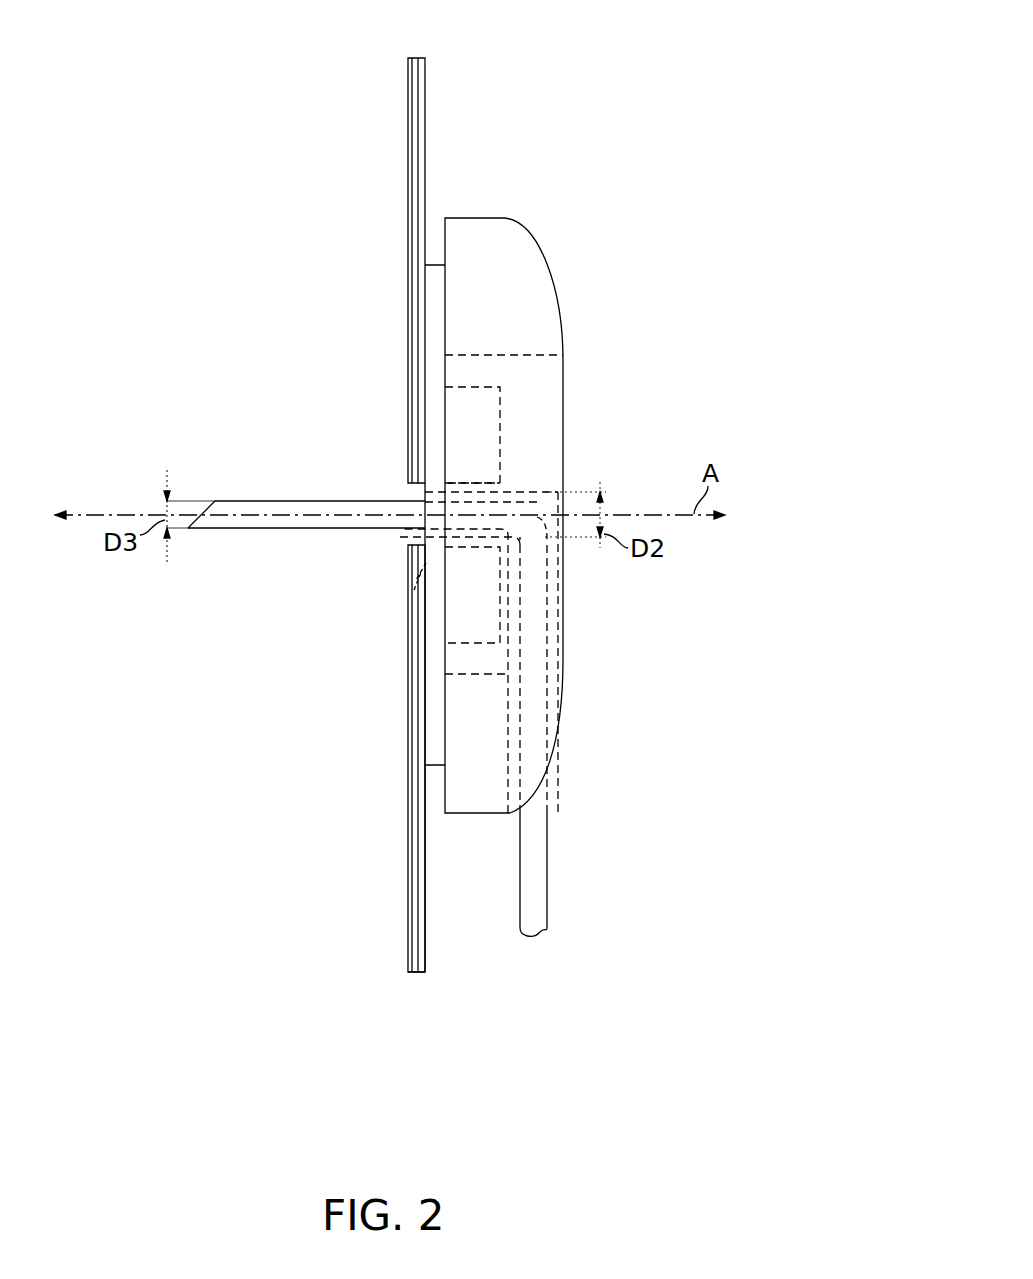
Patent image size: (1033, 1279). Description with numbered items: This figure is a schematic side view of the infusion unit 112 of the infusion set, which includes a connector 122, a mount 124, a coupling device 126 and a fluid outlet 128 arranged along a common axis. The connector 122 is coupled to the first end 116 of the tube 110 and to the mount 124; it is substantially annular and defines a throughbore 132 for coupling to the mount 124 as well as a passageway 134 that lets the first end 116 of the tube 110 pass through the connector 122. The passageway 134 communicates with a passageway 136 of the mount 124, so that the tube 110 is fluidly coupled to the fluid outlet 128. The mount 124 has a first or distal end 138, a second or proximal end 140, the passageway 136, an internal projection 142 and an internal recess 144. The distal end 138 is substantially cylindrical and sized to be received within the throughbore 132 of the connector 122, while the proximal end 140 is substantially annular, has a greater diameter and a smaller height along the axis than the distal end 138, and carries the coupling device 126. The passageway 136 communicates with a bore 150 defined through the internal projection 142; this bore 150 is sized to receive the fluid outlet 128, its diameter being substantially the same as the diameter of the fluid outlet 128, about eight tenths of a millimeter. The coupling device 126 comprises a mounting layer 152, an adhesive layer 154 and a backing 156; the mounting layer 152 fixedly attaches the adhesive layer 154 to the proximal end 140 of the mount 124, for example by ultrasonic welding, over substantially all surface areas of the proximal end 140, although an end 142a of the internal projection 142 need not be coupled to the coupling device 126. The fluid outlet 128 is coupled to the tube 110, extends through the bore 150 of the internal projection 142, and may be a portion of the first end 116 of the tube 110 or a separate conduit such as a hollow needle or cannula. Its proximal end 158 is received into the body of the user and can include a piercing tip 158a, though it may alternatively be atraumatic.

The tube 110 is at (567, 907).
The infusion unit 112 is at (633, 82).
The first end 116 is at (548, 838).
The connector 122 is at (583, 236).
The mount 124 is at (583, 373).
The coupling device 126 is at (377, 978).
The fluid outlet 128 is at (249, 558).
The throughbore 132 is at (531, 355).
The passageway 134 is at (508, 722).
The passageway 136 is at (562, 628).
The distal end 138 is at (590, 483).
The proximal end 140 is at (393, 657).
The internal projection 142 is at (447, 562).
The end 142a is at (425, 490).
The internal recess 144 is at (456, 388).
The bore 150 is at (462, 500).
The mounting layer 152 is at (428, 945).
The adhesive layer 154 is at (412, 975).
The backing 156 is at (408, 56).
The proximal end 158 is at (277, 537).
The piercing tip 158a is at (206, 500).